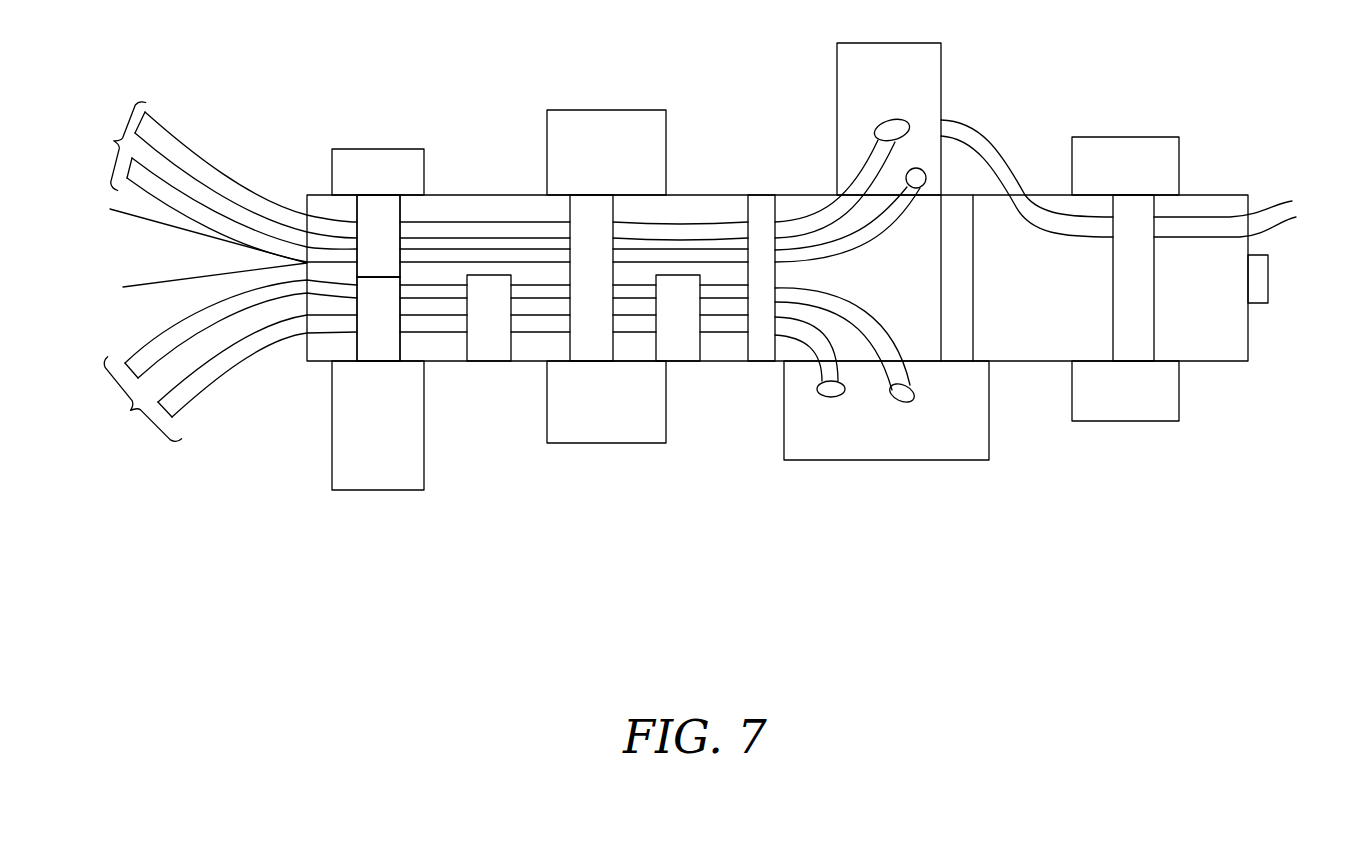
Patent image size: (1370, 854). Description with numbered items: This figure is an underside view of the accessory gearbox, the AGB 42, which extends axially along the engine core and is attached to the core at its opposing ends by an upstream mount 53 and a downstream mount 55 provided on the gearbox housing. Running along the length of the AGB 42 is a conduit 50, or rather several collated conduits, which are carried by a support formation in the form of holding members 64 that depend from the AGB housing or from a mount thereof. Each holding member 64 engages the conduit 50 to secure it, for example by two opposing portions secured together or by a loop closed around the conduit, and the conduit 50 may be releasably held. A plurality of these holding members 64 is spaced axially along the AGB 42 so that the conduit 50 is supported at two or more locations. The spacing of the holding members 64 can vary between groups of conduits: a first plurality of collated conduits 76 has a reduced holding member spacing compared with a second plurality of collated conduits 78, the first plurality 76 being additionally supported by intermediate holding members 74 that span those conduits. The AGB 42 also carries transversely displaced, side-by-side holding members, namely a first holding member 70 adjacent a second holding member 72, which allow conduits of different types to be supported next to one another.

The accessory gearbox 42 is at (922, 546).
The conduit 50 is at (232, 181).
The upstream mount 53 is at (143, 223).
The downstream mount 55 is at (1292, 235).
The holding member 64 is at (388, 200).
The first holding member 70 is at (390, 335).
The second holding member 72 is at (390, 251).
The intermediate holding member 74 is at (501, 332).
The first plurality of collated conduits 76 is at (139, 399).
The second plurality of collated conduits 78 is at (110, 146).